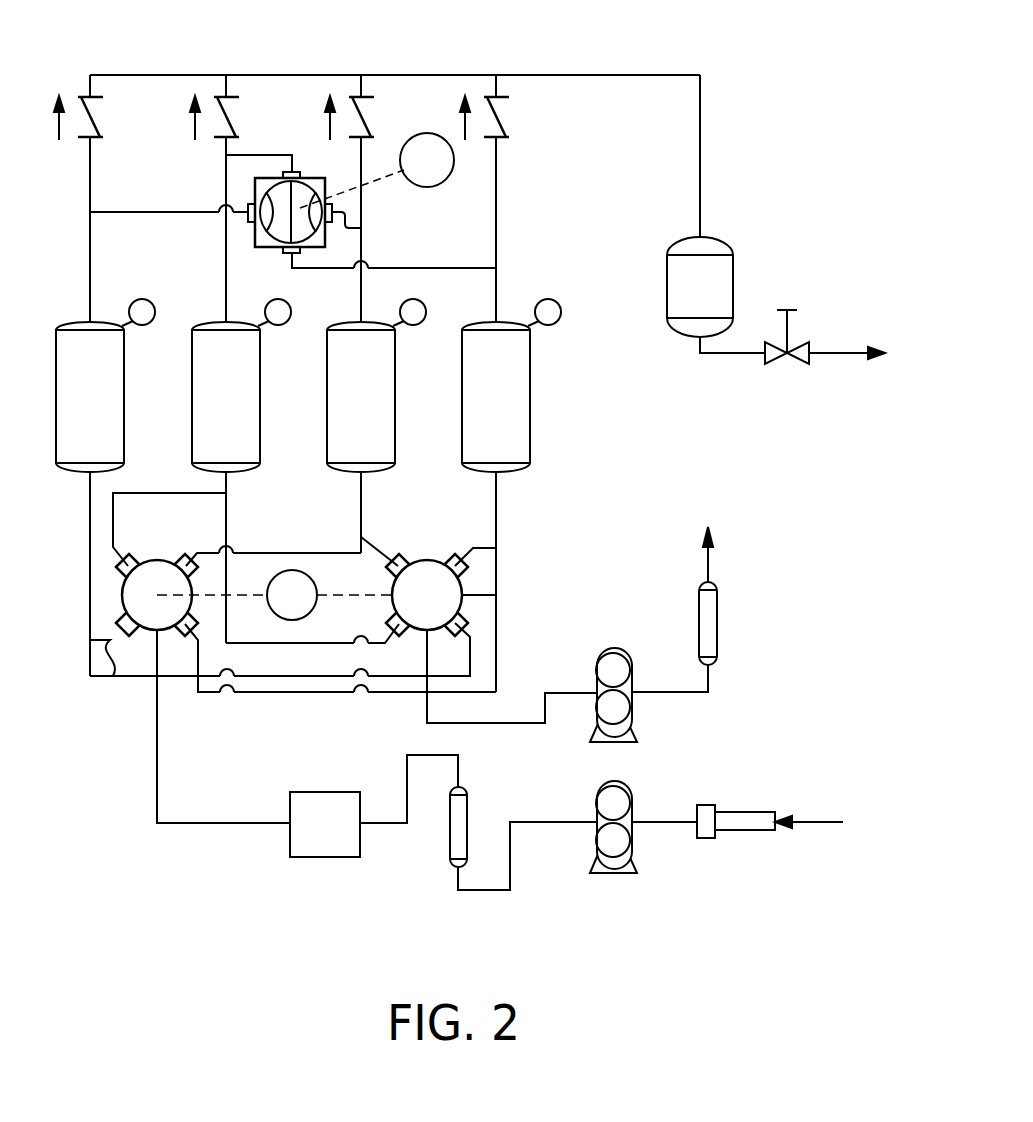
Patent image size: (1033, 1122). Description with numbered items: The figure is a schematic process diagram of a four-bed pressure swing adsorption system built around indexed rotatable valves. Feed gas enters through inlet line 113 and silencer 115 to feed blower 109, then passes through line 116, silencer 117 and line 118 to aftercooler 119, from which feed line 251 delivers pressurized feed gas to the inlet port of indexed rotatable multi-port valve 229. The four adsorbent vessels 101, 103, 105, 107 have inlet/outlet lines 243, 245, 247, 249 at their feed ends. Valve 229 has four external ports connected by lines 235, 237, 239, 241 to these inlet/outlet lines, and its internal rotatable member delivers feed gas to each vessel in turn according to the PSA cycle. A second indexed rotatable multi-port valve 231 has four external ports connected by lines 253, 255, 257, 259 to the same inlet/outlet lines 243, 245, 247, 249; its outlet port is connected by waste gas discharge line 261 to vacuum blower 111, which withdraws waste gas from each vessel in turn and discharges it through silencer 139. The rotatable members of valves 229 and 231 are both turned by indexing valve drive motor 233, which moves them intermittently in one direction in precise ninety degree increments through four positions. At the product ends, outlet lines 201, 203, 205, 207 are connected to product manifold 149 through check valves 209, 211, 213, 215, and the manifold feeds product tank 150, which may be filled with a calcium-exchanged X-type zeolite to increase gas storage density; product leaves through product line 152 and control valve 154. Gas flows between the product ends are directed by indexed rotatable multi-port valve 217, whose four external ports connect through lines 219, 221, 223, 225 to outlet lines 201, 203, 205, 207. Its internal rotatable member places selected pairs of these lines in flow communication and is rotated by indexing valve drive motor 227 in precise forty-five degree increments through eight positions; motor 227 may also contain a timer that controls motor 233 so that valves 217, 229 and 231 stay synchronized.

The adsorbent vessel 101 is at (111, 410).
The adsorbent vessel 103 is at (247, 410).
The adsorbent vessel 105 is at (382, 410).
The adsorbent vessel 107 is at (517, 410).
The feed blower 109 is at (633, 790).
The vacuum blower 111 is at (605, 648).
The inlet line 113 is at (803, 822).
The silencer 115 is at (748, 830).
The line 116 is at (565, 822).
The silencer 117 is at (450, 840).
The line 118 is at (407, 782).
The aftercooler 119 is at (347, 839).
The silencer 139 is at (717, 620).
The product manifold 149 is at (388, 75).
The product tank 150 is at (721, 296).
The product line 152 is at (713, 353).
The control valve 154 is at (795, 362).
The outlet line 201 is at (90, 283).
The outlet line 203 is at (226, 248).
The outlet line 205 is at (387, 268).
The outlet line 207 is at (496, 231).
The check valve 209 is at (102, 97).
The check valve 211 is at (236, 110).
The check valve 213 is at (373, 100).
The check valve 215 is at (508, 110).
The indexed rotatable multi-port valve 217 is at (313, 178).
The line 219 is at (118, 212).
The line 221 is at (226, 163).
The line 223 is at (361, 230).
The line 225 is at (292, 272).
The indexing valve drive motor 227 is at (454, 162).
The indexed rotatable multi-port valve 229 is at (120, 593).
The indexed rotatable multi-port valve 231 is at (496, 595).
The indexing valve drive motor 233 is at (296, 570).
The line 235 is at (113, 676).
The line 237 is at (143, 497).
The line 239 is at (342, 553).
The line 241 is at (313, 693).
The inlet/outlet line 243 is at (90, 525).
The inlet/outlet line 245 is at (226, 487).
The inlet/outlet line 247 is at (361, 490).
The inlet/outlet line 249 is at (496, 490).
The feed line 251 is at (156, 778).
The line 253 is at (333, 676).
The line 255 is at (400, 636).
The line 257 is at (375, 547).
The line 259 is at (496, 530).
The waste gas discharge line 261 is at (499, 723).